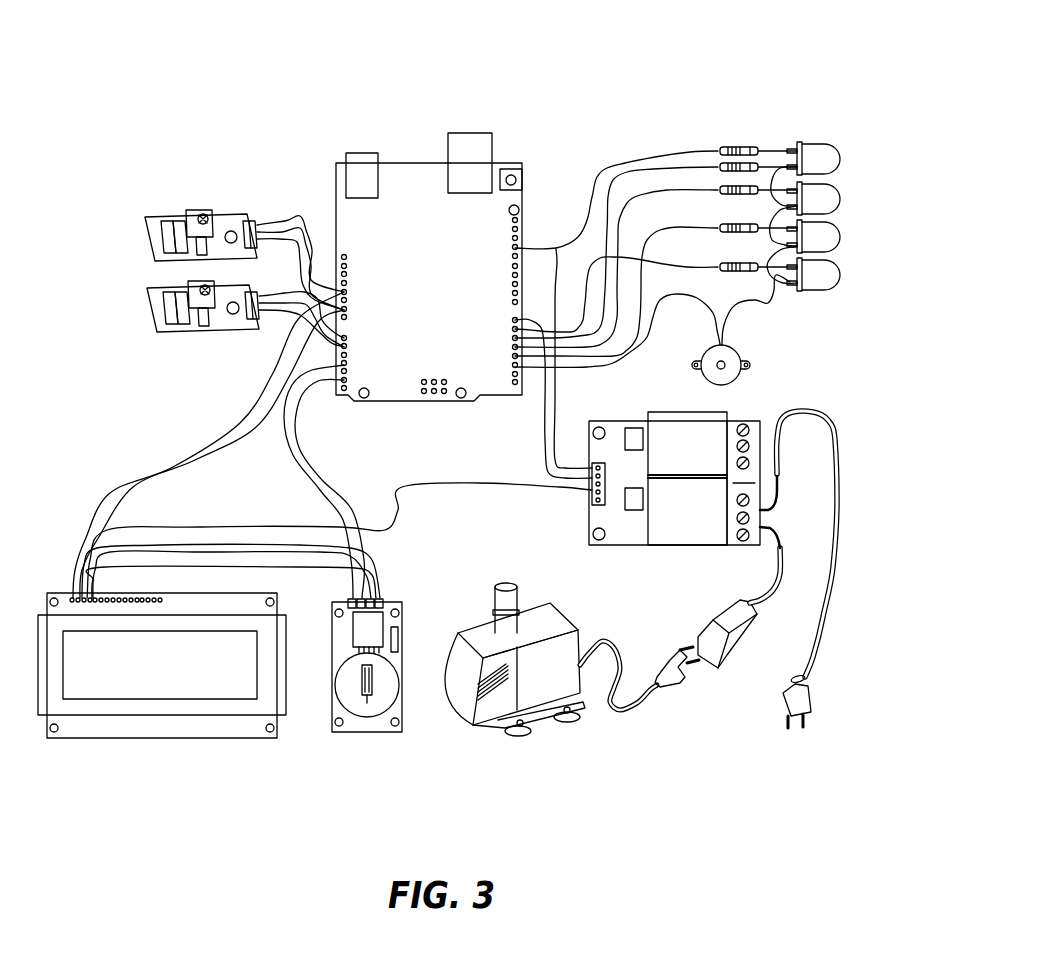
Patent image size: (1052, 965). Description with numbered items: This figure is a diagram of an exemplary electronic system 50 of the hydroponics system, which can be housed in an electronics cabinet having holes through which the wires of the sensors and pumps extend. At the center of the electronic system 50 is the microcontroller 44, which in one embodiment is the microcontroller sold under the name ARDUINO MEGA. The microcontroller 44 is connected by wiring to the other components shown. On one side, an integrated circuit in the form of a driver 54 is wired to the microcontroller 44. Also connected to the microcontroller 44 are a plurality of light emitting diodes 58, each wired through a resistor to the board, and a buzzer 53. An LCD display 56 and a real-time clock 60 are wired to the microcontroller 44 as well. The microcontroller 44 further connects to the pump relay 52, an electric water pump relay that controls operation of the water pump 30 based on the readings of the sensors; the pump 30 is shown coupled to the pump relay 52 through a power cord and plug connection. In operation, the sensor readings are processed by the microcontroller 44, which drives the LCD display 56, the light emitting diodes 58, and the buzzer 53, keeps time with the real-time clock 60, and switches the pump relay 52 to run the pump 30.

The electronic system 50 is at (98, 64).
The microcontroller 44 is at (415, 163).
The LM-393 driver 54 is at (145, 218).
The light emitting diodes 58 is at (847, 134).
The buzzer 53 is at (741, 378).
The pump relay 52 is at (637, 547).
The LCD display 56 is at (218, 738).
The real-time clock 60 is at (404, 597).
The pump 30 is at (477, 727).